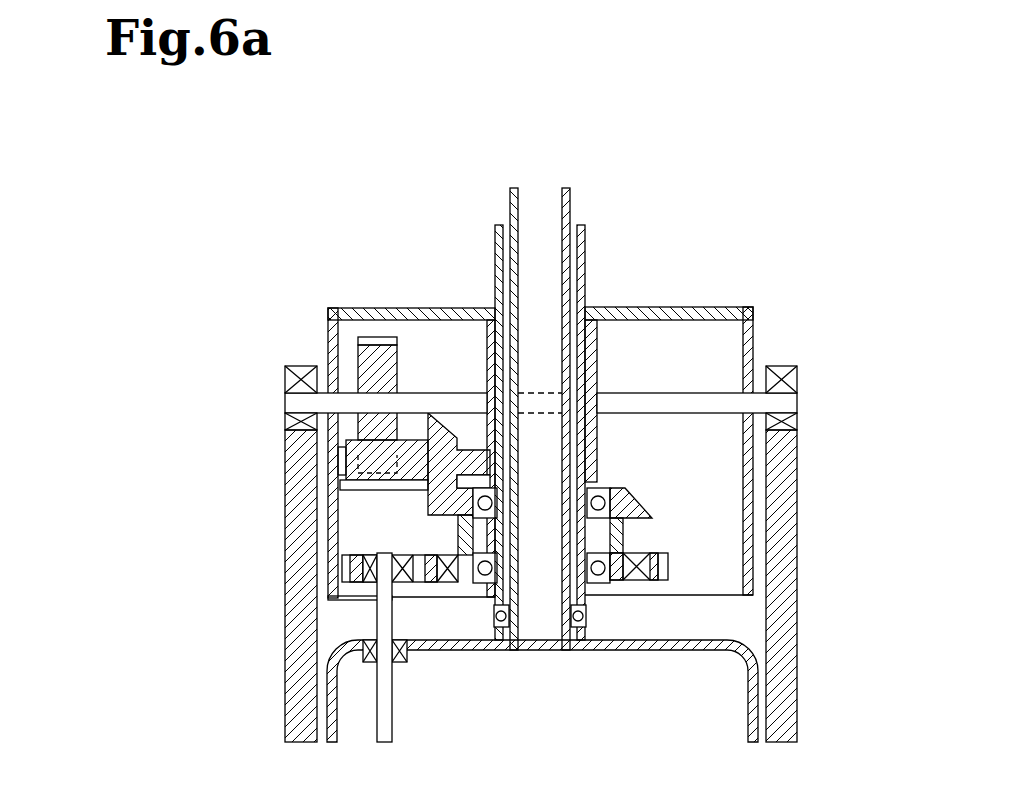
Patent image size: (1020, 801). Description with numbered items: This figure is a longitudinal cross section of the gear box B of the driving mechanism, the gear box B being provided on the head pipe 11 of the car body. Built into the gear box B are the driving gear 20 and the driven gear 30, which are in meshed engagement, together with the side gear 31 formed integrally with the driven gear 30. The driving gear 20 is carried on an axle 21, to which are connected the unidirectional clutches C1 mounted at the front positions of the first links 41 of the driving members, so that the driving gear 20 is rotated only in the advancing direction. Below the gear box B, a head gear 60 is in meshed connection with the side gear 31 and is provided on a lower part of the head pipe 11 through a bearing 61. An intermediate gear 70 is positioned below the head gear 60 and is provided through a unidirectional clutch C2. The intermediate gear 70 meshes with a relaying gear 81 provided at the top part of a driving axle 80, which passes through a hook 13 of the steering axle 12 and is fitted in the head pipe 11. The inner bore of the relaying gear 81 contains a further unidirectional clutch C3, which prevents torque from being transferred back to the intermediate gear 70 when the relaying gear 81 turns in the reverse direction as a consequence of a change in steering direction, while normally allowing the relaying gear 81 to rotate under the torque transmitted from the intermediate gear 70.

The steering axle 12 is at (566, 204).
The head pipe 11 is at (583, 245).
The gear box B is at (716, 318).
The driving gear 20 is at (372, 348).
The side gear 31 is at (440, 438).
The unidirectional clutch C1 is at (284, 390).
The axle 21 is at (796, 406).
The bearing 61 is at (600, 490).
The head gear 60 is at (625, 491).
The driven gear 30 is at (370, 487).
The relaying gear 81 is at (342, 572).
The unidirectional clutch C3 is at (372, 580).
The intermediate gear 70 is at (669, 568).
The first link 41 is at (798, 646).
The hook 13 is at (752, 695).
The driving axle 80 is at (383, 720).
The unidirectional clutch C2 is at (637, 580).